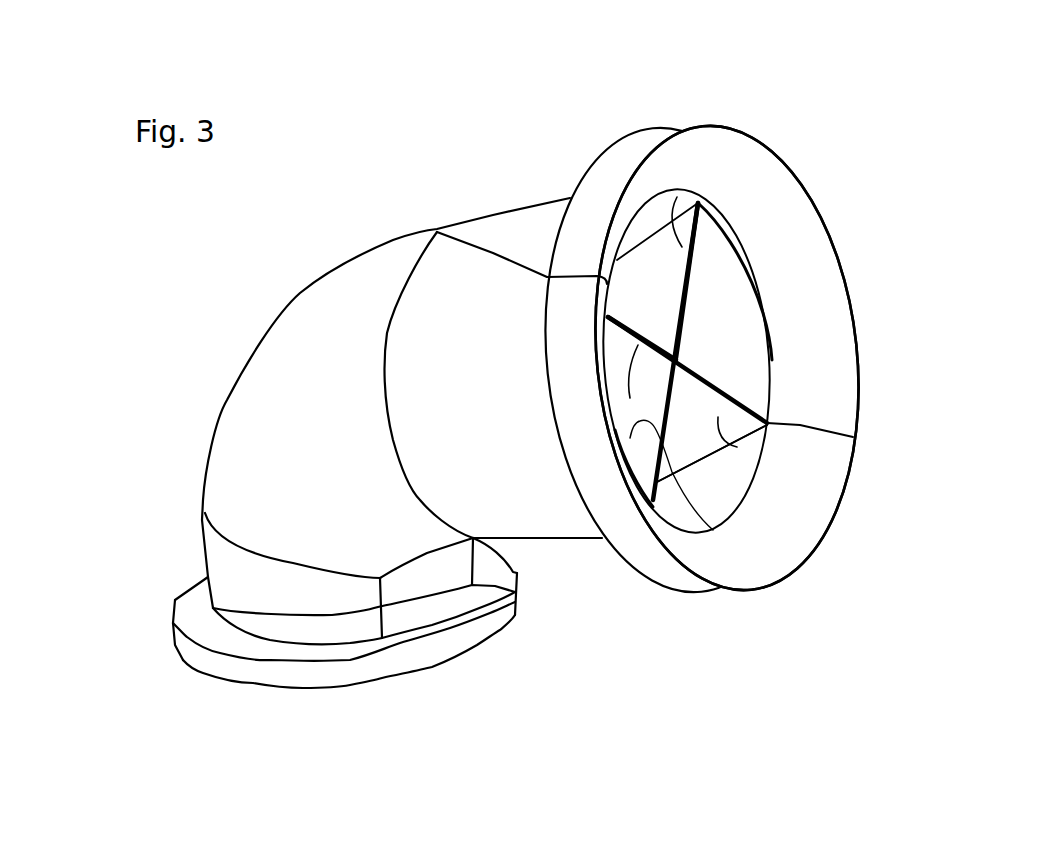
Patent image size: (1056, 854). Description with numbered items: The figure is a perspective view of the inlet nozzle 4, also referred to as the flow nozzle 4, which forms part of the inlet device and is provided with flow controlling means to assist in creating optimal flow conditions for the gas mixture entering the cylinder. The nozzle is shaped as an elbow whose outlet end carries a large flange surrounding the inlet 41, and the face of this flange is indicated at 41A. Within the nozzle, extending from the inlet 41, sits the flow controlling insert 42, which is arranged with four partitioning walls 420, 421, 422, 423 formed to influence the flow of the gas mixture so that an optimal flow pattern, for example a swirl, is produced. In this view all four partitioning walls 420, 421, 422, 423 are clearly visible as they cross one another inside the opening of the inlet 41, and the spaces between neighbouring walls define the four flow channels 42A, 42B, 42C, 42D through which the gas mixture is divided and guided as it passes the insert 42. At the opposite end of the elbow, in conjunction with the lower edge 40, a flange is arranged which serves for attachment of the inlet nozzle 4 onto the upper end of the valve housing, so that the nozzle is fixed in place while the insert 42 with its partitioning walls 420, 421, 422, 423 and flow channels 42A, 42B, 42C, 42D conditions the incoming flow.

The inlet nozzle 4 is at (380, 240).
The lower edge 40 is at (423, 670).
The inlet 41 is at (805, 342).
The flange front face 41A is at (842, 413).
The flow controlling insert 42 is at (629, 349).
The flow channel 42A is at (681, 457).
The flow channel 42B is at (720, 352).
The flow channel 42C is at (637, 277).
The flow channel 42D is at (637, 363).
The partitioning wall 420 is at (738, 447).
The partitioning wall 421 is at (698, 200).
The partitioning wall 422 is at (675, 388).
The partitioning wall 423 is at (710, 447).